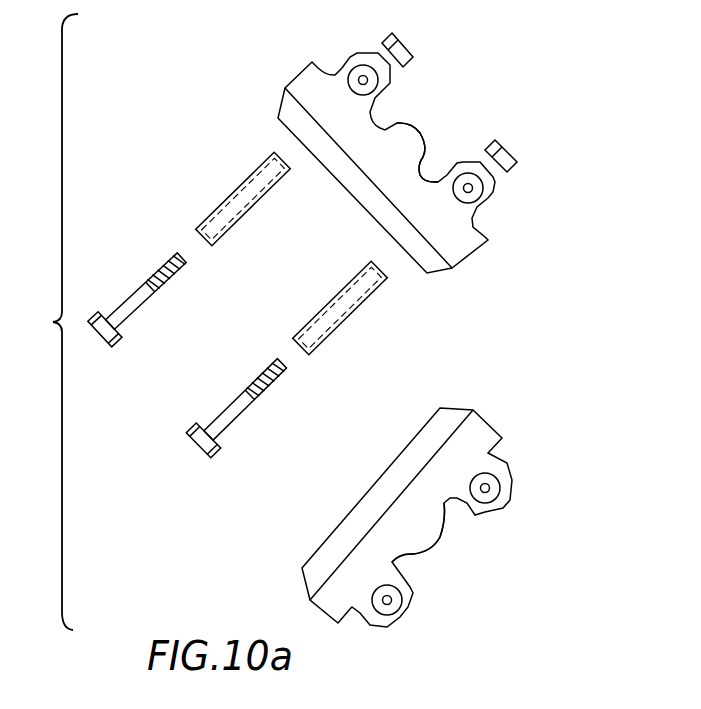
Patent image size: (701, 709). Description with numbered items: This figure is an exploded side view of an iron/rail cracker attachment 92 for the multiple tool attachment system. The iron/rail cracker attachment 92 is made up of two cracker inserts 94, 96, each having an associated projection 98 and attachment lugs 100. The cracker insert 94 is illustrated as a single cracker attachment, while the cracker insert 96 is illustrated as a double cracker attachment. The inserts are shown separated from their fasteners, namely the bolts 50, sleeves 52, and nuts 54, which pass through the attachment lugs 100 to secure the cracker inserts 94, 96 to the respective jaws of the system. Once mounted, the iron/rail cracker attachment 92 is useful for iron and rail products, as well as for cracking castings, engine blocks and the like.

The iron/rail cracker attachment 92 is at (50, 322).
The bolt 50 is at (146, 284).
The sleeve 52 is at (240, 188).
The nut 54 is at (402, 36).
The cracker insert 94 is at (419, 321).
The cracker insert 96 is at (480, 422).
The projection 98 is at (413, 130).
The attachment lug 100 is at (348, 62).